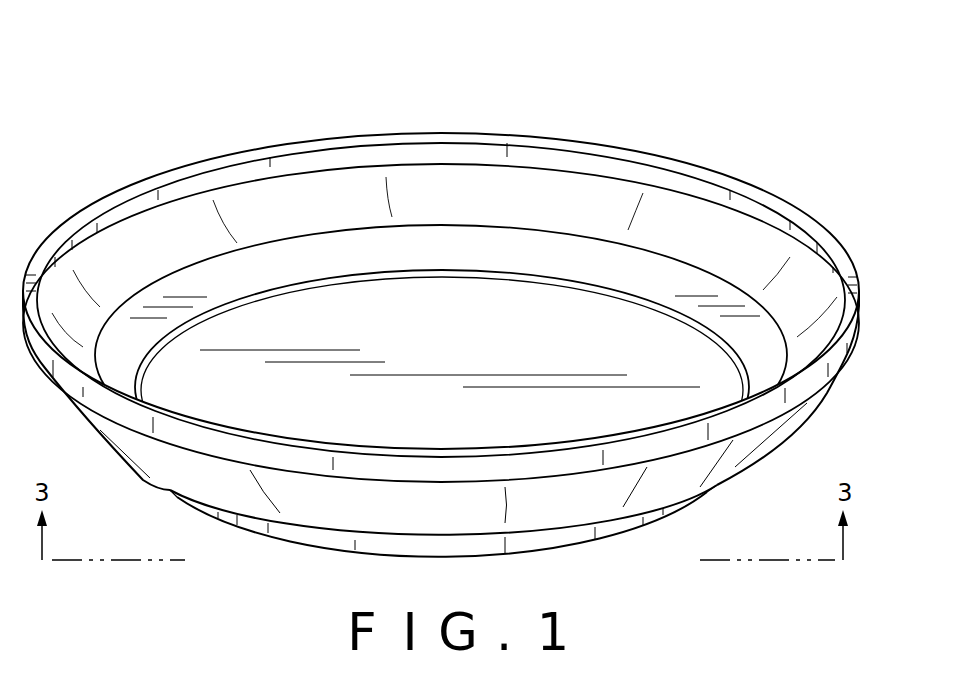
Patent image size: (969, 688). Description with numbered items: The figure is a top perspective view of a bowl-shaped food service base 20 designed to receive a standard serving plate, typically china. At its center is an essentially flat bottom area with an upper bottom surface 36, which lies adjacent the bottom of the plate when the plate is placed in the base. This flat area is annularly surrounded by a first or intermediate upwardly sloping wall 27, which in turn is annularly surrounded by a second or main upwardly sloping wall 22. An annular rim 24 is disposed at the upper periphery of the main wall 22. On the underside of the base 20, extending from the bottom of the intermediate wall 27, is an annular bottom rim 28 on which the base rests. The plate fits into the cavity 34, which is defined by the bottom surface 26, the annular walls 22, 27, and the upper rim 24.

The food service base 20 is at (545, 98).
The main upwardly sloping wall 22 is at (137, 255).
The annular rim 24 is at (212, 182).
The bottom surface 26 is at (563, 332).
The intermediate upwardly sloping wall 27 is at (413, 243).
The annular bottom rim 28 is at (311, 541).
The cavity 34 is at (700, 300).
The upper bottom surface 36 is at (393, 424).